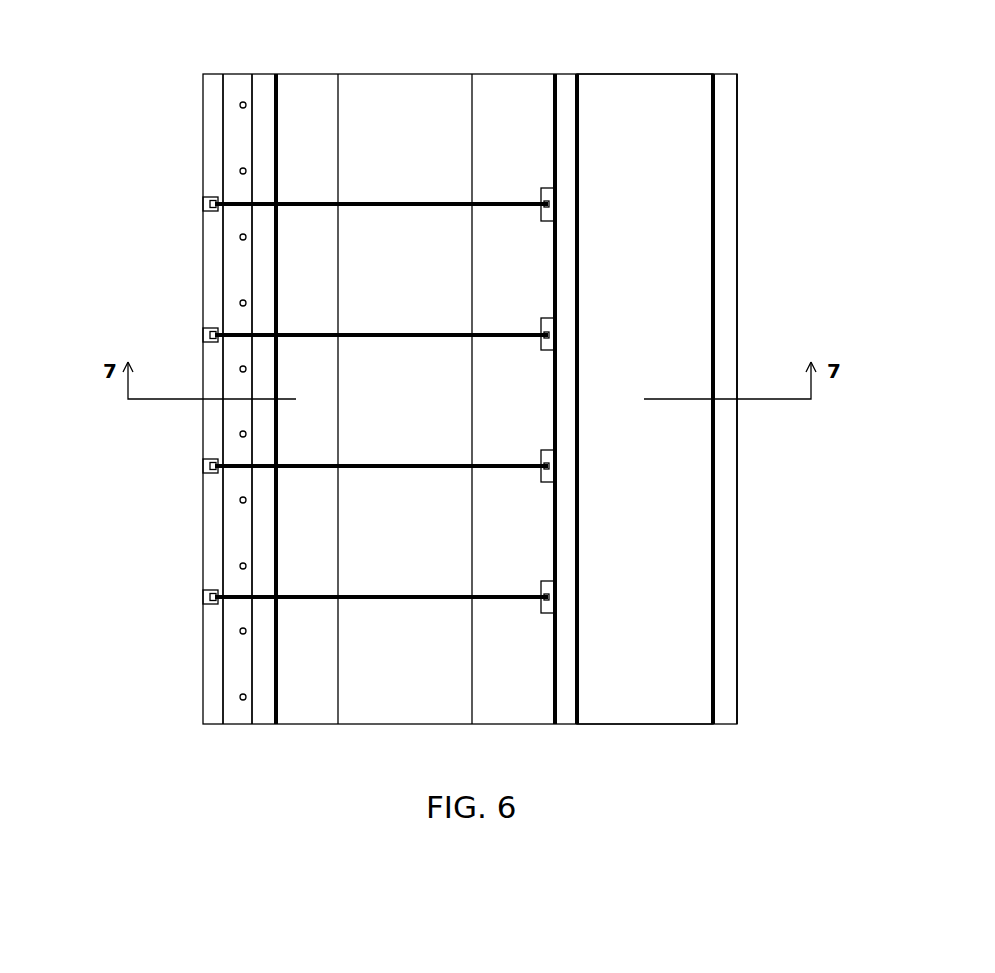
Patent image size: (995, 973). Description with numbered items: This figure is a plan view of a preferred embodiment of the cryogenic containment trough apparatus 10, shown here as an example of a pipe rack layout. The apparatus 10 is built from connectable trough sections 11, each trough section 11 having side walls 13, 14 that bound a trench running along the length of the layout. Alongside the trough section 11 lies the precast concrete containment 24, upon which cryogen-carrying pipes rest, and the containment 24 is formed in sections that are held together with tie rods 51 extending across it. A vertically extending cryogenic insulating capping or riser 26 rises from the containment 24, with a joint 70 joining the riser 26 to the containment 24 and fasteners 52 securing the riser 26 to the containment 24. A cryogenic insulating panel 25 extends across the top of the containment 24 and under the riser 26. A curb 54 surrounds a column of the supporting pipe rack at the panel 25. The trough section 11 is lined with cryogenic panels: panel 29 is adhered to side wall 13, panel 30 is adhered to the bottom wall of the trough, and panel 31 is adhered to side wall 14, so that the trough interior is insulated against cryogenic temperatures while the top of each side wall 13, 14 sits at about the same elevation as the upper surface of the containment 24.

The cryogenic containment trough apparatus 10 is at (108, 110).
The trough section 11 is at (725, 167).
The side wall 13 is at (563, 82).
The side wall 14 is at (725, 83).
The precast concrete containment 24 is at (215, 517).
The cryogenic insulating panel 25 is at (276, 105).
The capping or riser 26 is at (260, 82).
The cryogenic panel 29 is at (578, 355).
The cryogenic panel 30 is at (645, 399).
The cryogenic panel 31 is at (712, 300).
The tie rod 51 is at (448, 206).
The fastener 52 is at (240, 106).
The curb 54 is at (538, 315).
The joint 70 is at (241, 83).